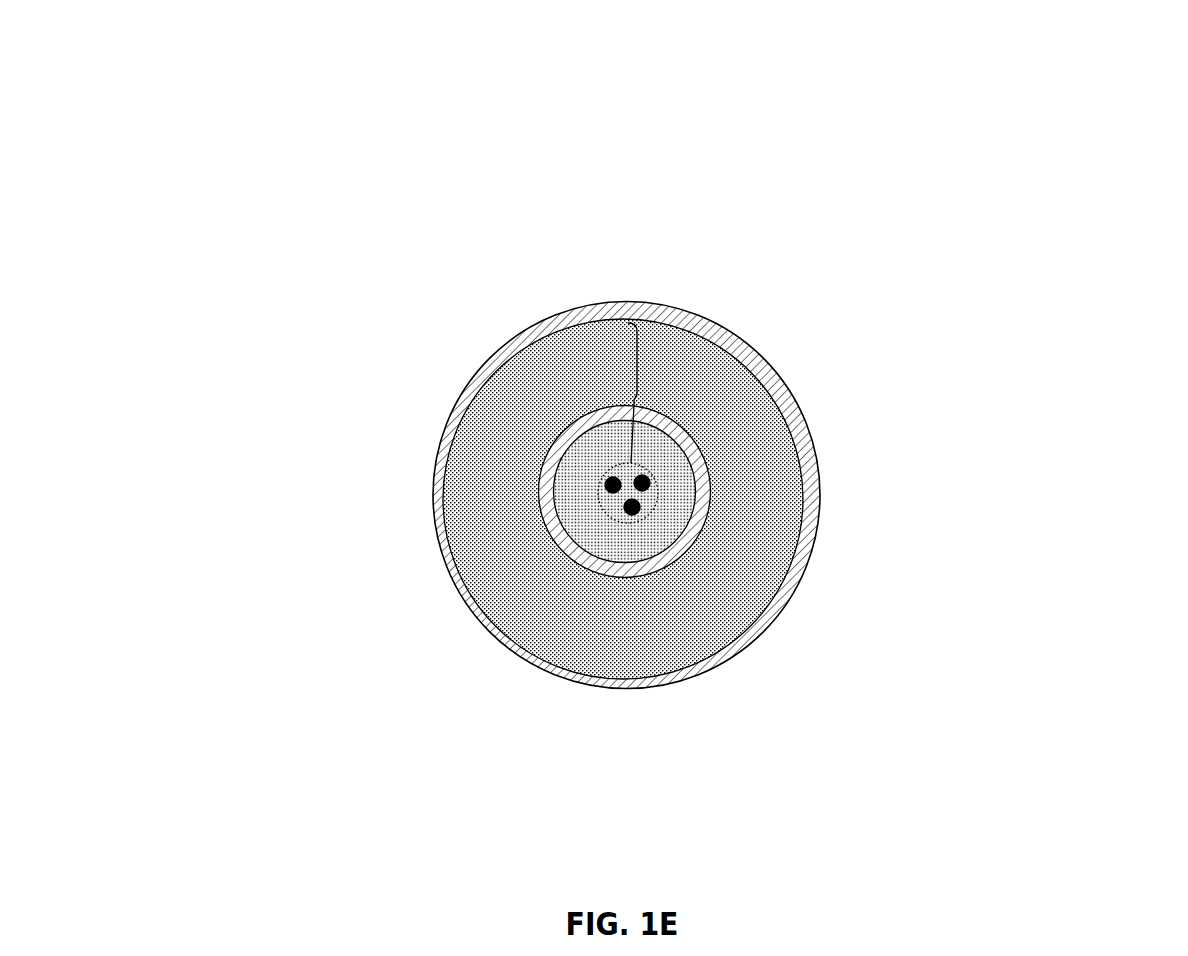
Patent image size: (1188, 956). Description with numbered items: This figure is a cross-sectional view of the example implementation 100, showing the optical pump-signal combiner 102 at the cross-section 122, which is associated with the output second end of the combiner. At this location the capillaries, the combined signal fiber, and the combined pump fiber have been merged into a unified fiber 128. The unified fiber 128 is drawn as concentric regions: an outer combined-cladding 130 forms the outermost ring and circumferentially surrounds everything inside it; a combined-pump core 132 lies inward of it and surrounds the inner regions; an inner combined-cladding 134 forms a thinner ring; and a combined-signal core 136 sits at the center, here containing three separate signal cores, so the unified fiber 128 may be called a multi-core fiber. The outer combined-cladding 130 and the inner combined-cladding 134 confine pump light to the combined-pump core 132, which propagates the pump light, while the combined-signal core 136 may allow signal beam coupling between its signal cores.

The example implementation 100 is at (138, 43).
The optical pump-signal combiner 102 is at (806, 424).
The cross-section 122 is at (772, 401).
The unified fiber 128 is at (494, 352).
The outer combined-cladding 130 is at (613, 321).
The combined-pump core 132 is at (643, 358).
The inner combined-cladding 134 is at (645, 432).
The combined-signal core 136 is at (651, 466).